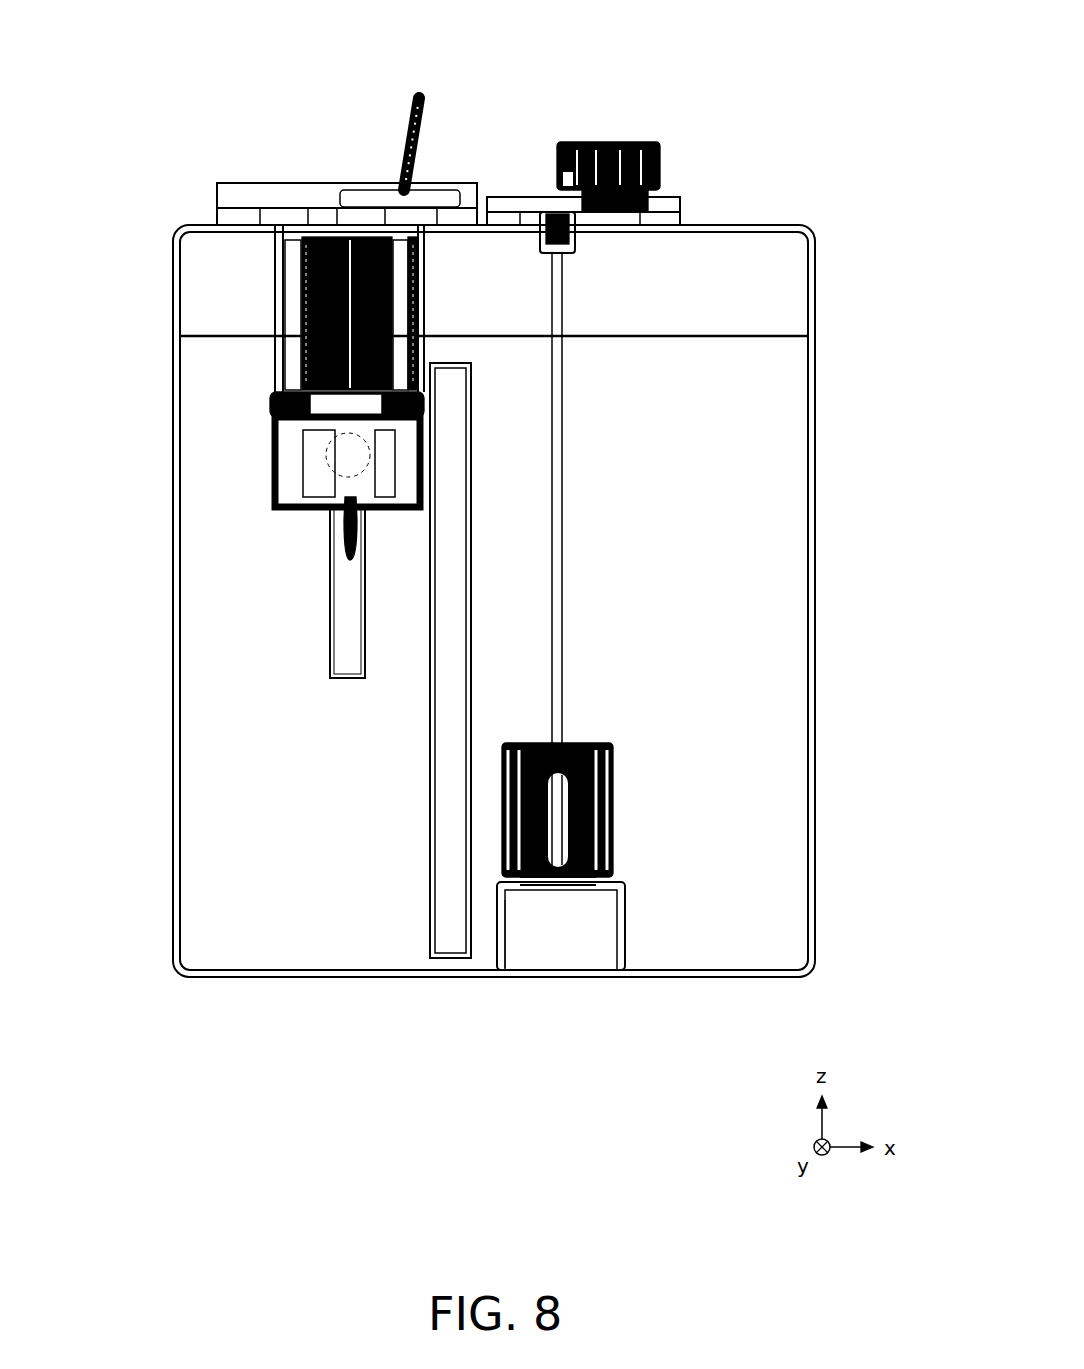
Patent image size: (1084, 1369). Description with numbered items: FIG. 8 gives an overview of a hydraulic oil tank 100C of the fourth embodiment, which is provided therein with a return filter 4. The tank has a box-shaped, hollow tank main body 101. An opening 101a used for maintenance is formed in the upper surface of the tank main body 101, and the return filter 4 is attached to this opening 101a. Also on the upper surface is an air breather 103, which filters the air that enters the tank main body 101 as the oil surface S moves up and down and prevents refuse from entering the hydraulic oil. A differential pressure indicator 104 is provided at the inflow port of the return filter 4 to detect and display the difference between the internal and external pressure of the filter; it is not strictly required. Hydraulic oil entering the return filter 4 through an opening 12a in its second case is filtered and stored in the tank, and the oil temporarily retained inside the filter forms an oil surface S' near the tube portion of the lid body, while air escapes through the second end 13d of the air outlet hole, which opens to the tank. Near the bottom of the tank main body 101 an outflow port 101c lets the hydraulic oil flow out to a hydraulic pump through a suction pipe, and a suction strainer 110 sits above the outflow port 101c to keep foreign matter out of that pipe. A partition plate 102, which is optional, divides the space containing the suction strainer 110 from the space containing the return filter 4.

The hydraulic oil tank 100C is at (846, 33).
The tank main body 101 is at (441, 601).
The opening 101a is at (448, 157).
The outflow port 101c is at (469, 974).
The partition plate 102 is at (335, 702).
The air breather 103 is at (627, 150).
The differential pressure indicator 104 is at (352, 131).
The suction strainer 110 is at (641, 894).
The opening 12a is at (305, 442).
The second end 13d is at (452, 237).
The return filter 4 is at (250, 321).
The oil surface S is at (516, 241).
The oil surface S' is at (245, 136).